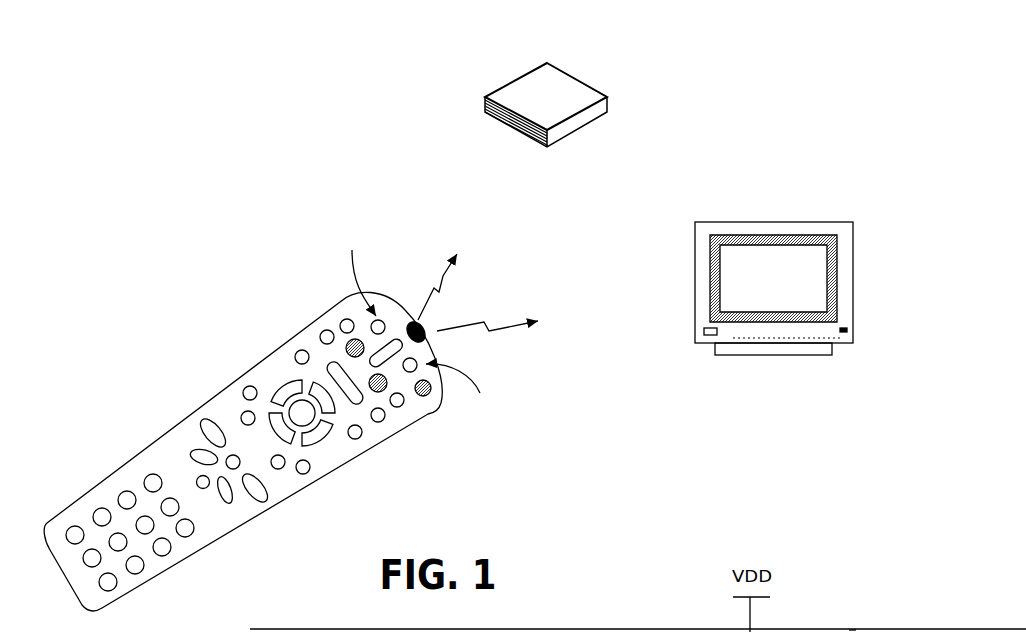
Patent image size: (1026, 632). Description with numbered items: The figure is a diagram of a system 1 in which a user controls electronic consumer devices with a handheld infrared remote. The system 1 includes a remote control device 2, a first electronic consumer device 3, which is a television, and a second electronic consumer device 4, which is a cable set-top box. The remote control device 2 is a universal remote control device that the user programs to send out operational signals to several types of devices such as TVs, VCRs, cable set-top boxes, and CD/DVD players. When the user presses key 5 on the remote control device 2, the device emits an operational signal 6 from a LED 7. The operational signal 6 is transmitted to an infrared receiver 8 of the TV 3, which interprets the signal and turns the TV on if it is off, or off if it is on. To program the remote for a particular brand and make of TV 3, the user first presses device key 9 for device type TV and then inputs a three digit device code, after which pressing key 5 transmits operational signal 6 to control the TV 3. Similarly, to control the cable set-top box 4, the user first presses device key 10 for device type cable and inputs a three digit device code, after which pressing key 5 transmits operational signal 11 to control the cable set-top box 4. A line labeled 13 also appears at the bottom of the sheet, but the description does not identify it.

The system 1 is at (277, 110).
The remote control device 2 is at (183, 408).
The first electronic consumer device 3 is at (772, 311).
The second electronic consumer device 4 is at (607, 98).
The key 5 is at (433, 399).
The operational signal 6 is at (542, 318).
The LED 7 is at (427, 342).
The infrared receiver 8 is at (710, 336).
The device key 9 is at (342, 314).
The device key 10 is at (408, 412).
The operational signal 11 is at (478, 261).
The circuit line 13 is at (537, 628).